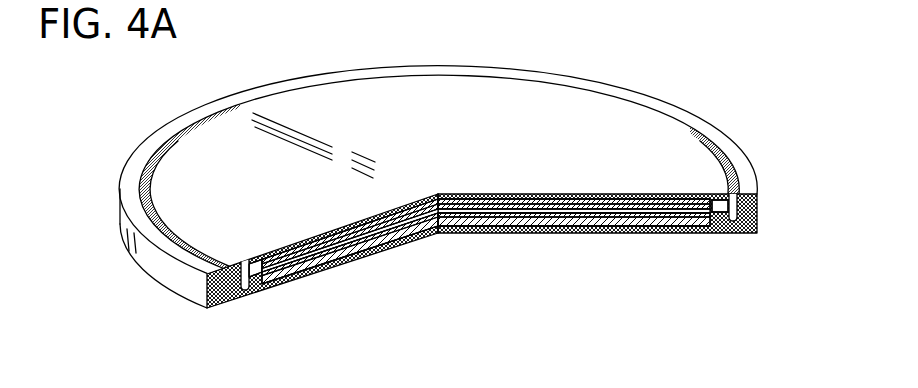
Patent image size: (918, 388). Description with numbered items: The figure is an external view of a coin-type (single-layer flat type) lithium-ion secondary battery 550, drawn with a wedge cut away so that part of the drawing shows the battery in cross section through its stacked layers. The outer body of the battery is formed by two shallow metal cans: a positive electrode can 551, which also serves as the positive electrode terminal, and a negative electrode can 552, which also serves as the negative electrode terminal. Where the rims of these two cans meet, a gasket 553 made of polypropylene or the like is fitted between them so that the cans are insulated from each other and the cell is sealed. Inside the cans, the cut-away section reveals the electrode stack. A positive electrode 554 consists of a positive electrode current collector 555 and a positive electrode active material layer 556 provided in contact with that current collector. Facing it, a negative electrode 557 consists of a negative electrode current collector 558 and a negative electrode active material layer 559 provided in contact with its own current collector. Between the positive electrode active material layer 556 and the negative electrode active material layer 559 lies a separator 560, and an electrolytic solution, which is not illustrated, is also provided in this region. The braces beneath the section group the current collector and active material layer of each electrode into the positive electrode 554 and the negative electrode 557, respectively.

The coin-type lithium-ion secondary battery 550 is at (177, 63).
The positive electrode can 551 is at (758, 223).
The negative electrode can 552 is at (612, 112).
The gasket 553 is at (758, 208).
The positive electrode 554 is at (755, 330).
The positive electrode current collector 555 is at (688, 233).
The positive electrode active material layer 556 is at (643, 233).
The negative electrode 557 is at (552, 310).
The negative electrode current collector 558 is at (457, 233).
The negative electrode active material layer 559 is at (493, 233).
The separator 560 is at (567, 233).